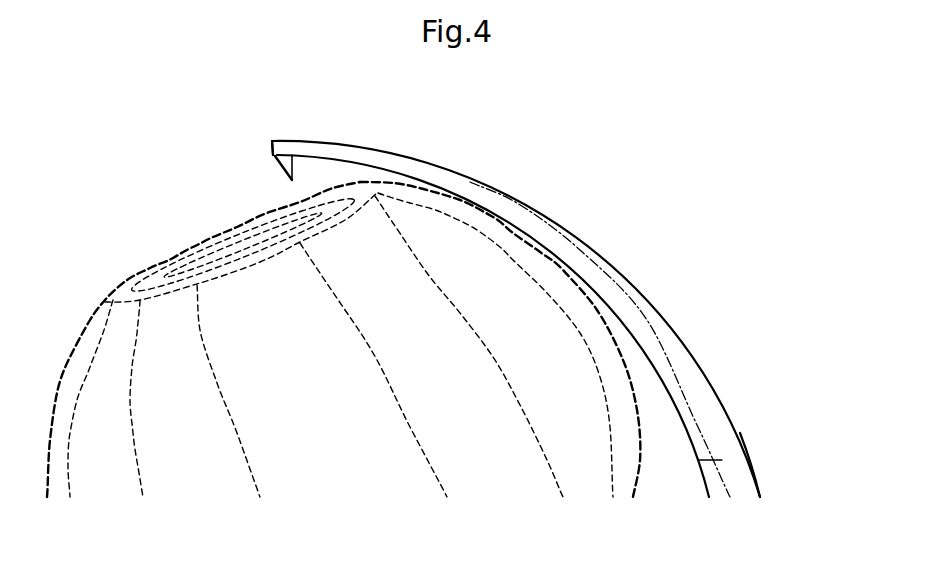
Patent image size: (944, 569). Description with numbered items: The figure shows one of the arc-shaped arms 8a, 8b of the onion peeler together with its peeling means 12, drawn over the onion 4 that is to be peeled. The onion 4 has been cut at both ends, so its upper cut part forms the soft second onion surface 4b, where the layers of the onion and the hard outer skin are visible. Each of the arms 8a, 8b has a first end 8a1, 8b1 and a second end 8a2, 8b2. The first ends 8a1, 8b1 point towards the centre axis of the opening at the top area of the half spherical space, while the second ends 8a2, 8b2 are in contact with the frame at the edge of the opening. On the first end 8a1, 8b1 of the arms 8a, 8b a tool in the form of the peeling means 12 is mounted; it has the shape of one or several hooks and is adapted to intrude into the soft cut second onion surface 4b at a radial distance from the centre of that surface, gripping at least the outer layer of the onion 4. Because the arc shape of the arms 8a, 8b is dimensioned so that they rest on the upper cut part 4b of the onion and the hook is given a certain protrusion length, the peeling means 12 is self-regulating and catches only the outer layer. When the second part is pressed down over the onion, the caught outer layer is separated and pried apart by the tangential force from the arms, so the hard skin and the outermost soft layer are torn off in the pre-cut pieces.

The onion 4 is at (172, 403).
The second onion surface 4b is at (183, 258).
The second arm 8a is at (516, 319).
The second arm 8b is at (570, 232).
The first end of the second arm 8a1 is at (324, 110).
The first end of the second arm 8b1 is at (286, 140).
The second end of the second arm 8a2 is at (806, 465).
The second end of the second arm 8b2 is at (747, 495).
The peeling means 12 is at (280, 166).